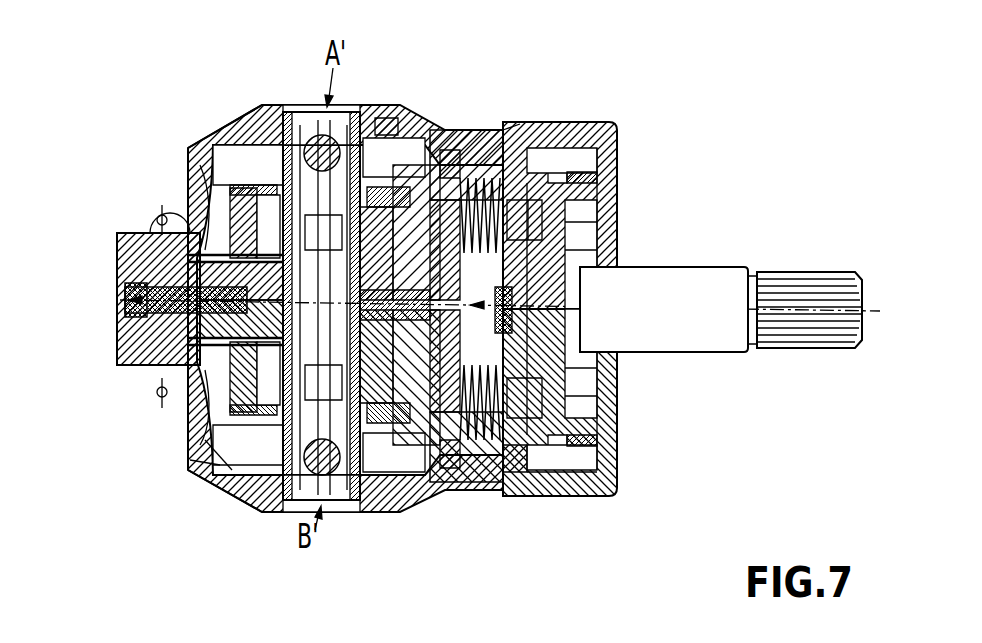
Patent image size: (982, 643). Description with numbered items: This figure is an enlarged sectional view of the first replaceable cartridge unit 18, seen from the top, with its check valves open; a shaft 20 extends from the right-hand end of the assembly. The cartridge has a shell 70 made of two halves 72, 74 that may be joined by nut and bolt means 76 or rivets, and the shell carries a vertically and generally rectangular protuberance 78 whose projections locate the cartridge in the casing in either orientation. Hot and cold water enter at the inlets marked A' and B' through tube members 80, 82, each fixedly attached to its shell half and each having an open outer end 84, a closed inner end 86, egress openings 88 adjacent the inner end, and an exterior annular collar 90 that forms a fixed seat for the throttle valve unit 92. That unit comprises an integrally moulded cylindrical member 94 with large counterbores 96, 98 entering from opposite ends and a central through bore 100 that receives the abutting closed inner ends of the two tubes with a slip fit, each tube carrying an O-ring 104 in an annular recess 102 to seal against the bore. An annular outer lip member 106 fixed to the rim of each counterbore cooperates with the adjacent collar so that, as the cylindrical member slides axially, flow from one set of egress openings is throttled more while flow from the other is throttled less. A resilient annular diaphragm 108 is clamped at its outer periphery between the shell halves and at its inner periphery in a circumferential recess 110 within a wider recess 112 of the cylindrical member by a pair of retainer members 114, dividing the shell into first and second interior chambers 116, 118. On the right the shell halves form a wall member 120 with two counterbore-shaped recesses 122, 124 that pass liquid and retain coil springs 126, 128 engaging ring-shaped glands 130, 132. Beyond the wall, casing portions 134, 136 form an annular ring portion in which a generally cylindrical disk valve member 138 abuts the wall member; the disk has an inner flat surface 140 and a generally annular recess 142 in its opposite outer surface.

The replaceable cartridge unit 18 is at (612, 51).
The drive shaft 20 is at (708, 289).
The shell 70 is at (155, 120).
The shell half 72 is at (422, 135).
The shell half 74 is at (430, 497).
The nut and bolt means 76 is at (160, 217).
The protuberance 78 is at (160, 397).
The tube member 80 is at (375, 112).
The tube member 82 is at (255, 495).
The open outer end 84 is at (300, 115).
The closed inner end 86 is at (420, 470).
The egress openings 88 is at (250, 105).
The annular collar 90 is at (215, 118).
The throttle valve unit 92 is at (205, 457).
The cylindrical member 94 is at (170, 412).
The counterbore 96 is at (200, 215).
The counterbore 98 is at (210, 467).
The central through bore 100 is at (150, 237).
The annular recess 102 is at (458, 126).
The O-ring 104 is at (120, 257).
The annular outer lip member 106 is at (192, 128).
The diaphragm 108 is at (117, 370).
The circumferential recess 110 is at (490, 132).
The wider recess 112 is at (470, 500).
The retainer members 114 is at (170, 367).
The first interior chamber 116 is at (385, 122).
The second interior chamber 118 is at (355, 505).
The wall member 120 is at (600, 350).
The cylindrically shaped recess 122 is at (502, 137).
The cylindrically shaped recess 124 is at (490, 495).
The coil spring 126 is at (545, 127).
The coil spring 128 is at (560, 503).
The ring-shaped gland 130 is at (575, 130).
The ring-shaped gland 132 is at (590, 354).
The casing portion 134 is at (615, 130).
The casing portion 136 is at (600, 492).
The disk valve member 138 is at (600, 185).
The inner flat surface 140 is at (595, 267).
The annular recess 142 is at (610, 212).